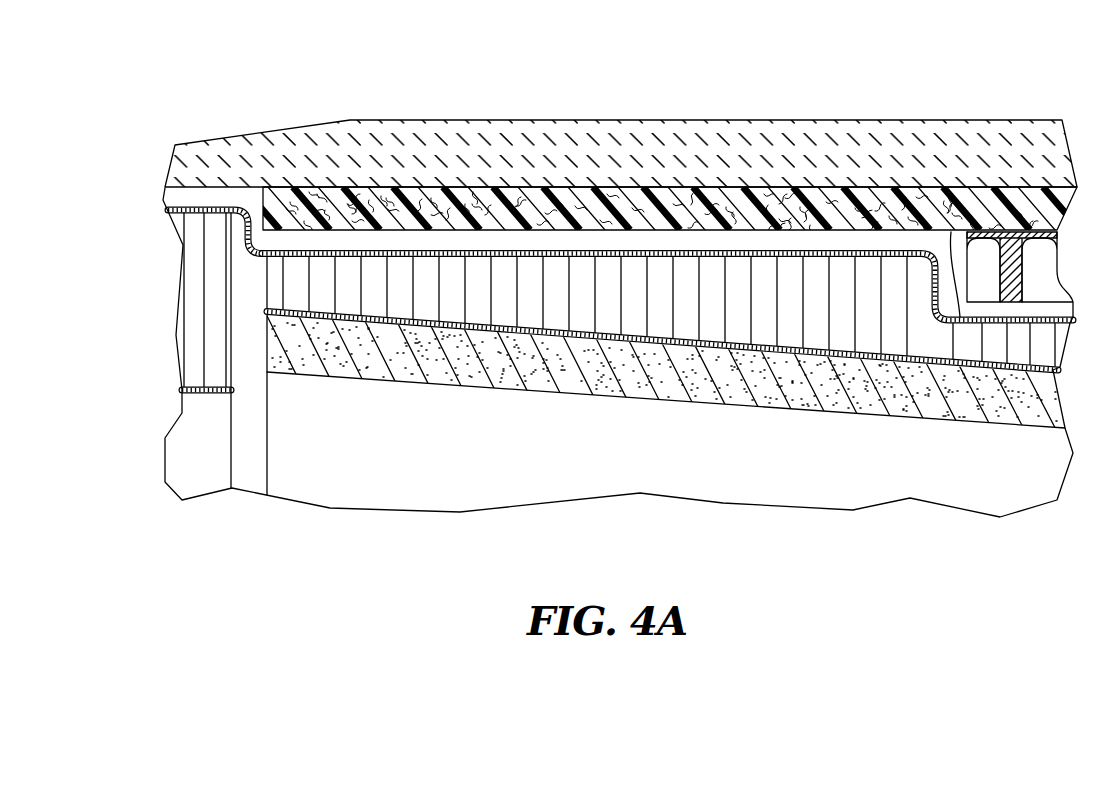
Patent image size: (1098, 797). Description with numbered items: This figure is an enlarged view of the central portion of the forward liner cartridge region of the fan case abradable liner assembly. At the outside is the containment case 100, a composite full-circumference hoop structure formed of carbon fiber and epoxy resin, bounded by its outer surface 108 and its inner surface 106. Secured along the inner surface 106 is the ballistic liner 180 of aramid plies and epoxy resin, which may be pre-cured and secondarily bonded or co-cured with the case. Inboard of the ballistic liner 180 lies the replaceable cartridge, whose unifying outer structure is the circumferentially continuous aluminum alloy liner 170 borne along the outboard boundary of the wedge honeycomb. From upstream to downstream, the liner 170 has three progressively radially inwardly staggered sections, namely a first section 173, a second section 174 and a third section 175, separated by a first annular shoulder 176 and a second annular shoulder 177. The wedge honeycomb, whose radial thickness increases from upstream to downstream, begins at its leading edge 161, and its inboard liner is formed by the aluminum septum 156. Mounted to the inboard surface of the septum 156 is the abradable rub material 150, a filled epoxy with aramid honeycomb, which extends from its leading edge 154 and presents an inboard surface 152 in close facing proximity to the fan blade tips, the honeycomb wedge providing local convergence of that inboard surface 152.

The containment case 100 is at (728, 137).
The outer surface 108 is at (825, 120).
The inner surface 106 is at (436, 200).
The ballistic liner 180 is at (672, 200).
The annular shoulder 176 is at (255, 230).
The second section 174 is at (517, 255).
The first section 173 is at (192, 207).
The annular shoulder 177 is at (960, 240).
The third section 175 is at (978, 232).
The leading edge 161 is at (268, 279).
The liner 170 is at (292, 258).
The leading edge 154 is at (270, 323).
The aluminum septum 156 is at (740, 345).
The inboard surface 152 is at (857, 417).
The abradable rub material 150 is at (960, 395).